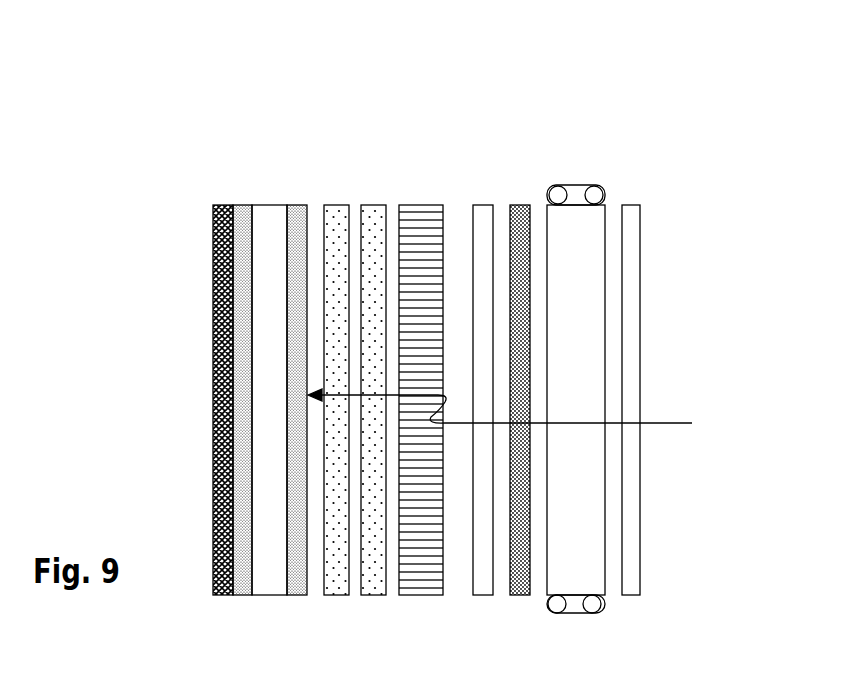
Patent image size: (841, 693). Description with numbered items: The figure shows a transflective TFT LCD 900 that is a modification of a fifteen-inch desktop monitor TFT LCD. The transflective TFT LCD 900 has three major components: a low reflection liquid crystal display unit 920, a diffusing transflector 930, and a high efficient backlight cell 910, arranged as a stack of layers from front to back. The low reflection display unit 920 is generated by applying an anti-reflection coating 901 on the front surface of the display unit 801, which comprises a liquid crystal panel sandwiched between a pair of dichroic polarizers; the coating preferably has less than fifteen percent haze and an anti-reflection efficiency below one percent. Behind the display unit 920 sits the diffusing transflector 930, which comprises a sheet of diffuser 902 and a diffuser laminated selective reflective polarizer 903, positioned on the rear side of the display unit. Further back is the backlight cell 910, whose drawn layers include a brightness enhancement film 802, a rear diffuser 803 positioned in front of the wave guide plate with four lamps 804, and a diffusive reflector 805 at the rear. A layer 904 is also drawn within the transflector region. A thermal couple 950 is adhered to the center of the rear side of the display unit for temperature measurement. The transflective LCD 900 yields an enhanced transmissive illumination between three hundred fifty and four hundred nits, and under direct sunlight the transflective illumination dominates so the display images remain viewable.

The transflective TFT LCD 900 is at (638, 613).
The high efficient backlight cell 910 is at (725, 75).
The low reflection liquid crystal display unit 920 is at (235, 75).
The diffusing transflector 930 is at (422, 75).
The anti-reflection coating 901 is at (217, 205).
The display unit 801 is at (267, 203).
The sheet of diffuser 902 is at (337, 212).
The diffuser laminated selective reflective polarizer 903 is at (377, 210).
The horizontally striped layer 904 is at (421, 205).
The brightness enhancement film 802 is at (477, 205).
The rear diffuser 803 is at (528, 205).
The wave guide plate with four lamps 804 is at (583, 189).
The diffusive reflector 805 is at (640, 212).
The thermal couple 950 is at (537, 411).